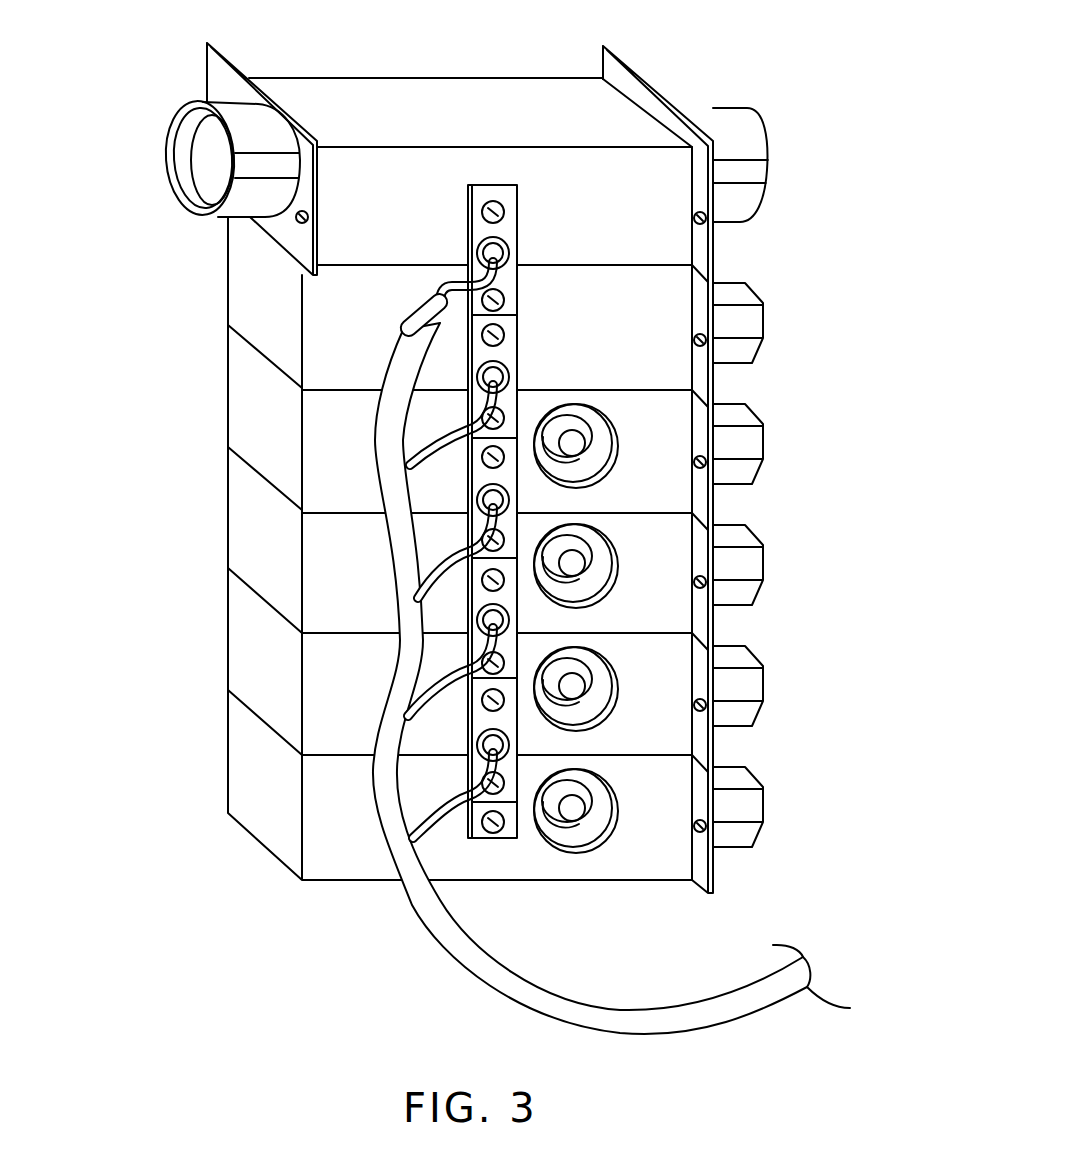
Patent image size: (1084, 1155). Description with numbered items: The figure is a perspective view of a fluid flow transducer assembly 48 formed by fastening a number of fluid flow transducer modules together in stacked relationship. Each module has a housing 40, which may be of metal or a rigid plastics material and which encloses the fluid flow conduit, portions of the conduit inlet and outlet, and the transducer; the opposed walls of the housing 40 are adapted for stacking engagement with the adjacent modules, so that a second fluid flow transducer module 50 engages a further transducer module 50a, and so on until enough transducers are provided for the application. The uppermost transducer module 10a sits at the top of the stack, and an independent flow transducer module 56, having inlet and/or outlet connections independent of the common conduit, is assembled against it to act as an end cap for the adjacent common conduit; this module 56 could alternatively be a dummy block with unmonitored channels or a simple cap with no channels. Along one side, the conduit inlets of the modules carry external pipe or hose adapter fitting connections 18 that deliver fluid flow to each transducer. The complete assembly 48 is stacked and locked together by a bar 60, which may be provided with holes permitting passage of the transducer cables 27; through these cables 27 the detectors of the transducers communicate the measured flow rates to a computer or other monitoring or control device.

The uppermost transducer module 10a is at (228, 283).
The pipe or hose adapter fitting connection 18 is at (763, 438).
The cable 27 is at (490, 283).
The housing 40 is at (228, 388).
The assembly 48 is at (132, 508).
The second fluid flow transducer module 50 is at (230, 633).
The further transducer module 50a is at (230, 800).
The independent flow transducer module 56 is at (297, 82).
The bar 60 is at (497, 207).